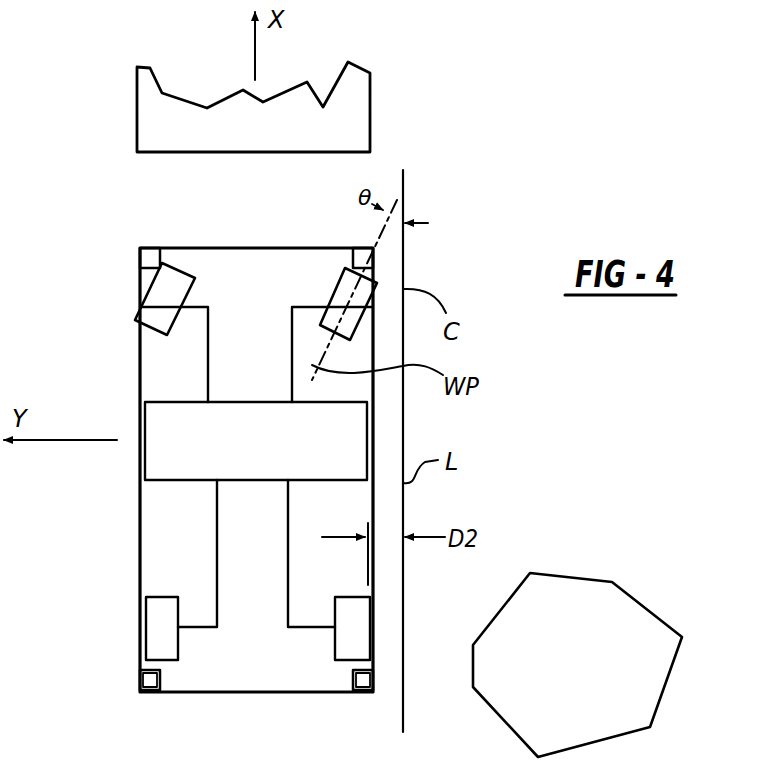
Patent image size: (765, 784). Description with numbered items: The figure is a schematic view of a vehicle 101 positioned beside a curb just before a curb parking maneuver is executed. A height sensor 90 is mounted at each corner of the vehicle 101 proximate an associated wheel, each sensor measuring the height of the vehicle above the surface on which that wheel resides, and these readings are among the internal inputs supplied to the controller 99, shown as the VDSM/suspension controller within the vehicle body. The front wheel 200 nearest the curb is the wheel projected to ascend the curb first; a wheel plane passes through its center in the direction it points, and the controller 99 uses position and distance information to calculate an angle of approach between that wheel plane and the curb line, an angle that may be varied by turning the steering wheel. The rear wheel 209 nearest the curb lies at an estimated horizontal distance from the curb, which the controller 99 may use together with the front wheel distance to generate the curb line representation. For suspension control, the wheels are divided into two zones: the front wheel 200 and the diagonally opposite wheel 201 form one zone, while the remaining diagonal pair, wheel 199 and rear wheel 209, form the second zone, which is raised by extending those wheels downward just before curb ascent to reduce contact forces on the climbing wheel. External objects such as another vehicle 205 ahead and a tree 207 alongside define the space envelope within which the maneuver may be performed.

The vehicle 205 is at (153, 127).
The wheel 199 is at (150, 300).
The front wheel 200 is at (343, 292).
The controller 99 is at (183, 480).
The vehicle 101 is at (140, 537).
The wheel 201 is at (146, 615).
The rear wheel 209 is at (335, 647).
The height sensor 90 is at (162, 678).
The tree 207 is at (585, 597).